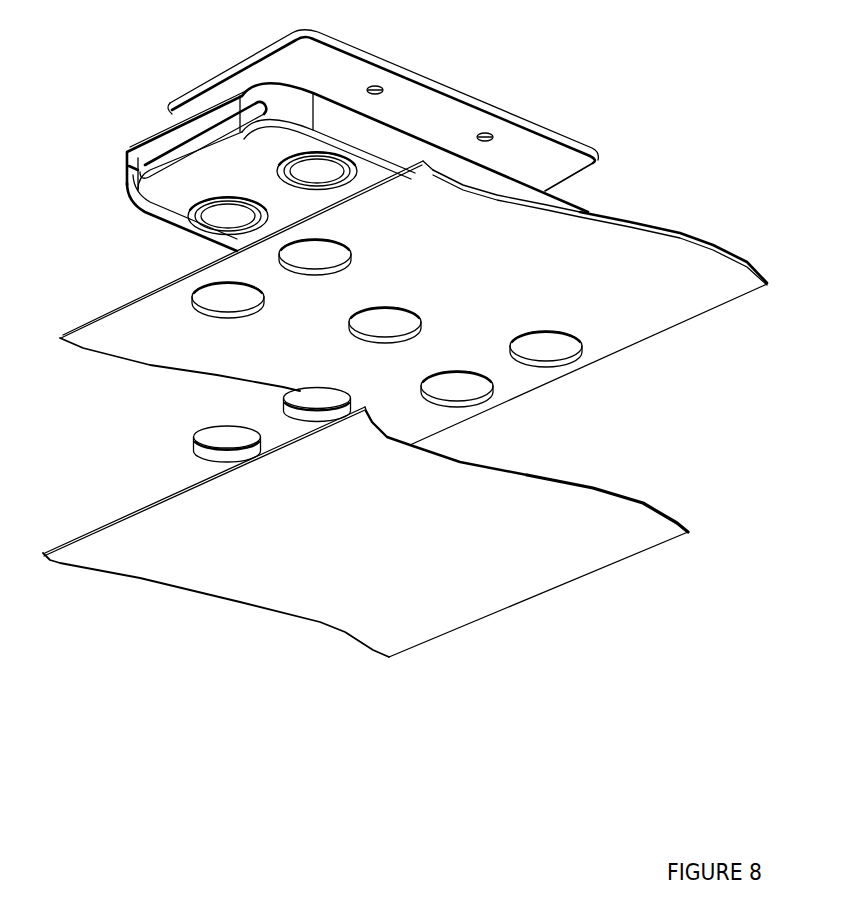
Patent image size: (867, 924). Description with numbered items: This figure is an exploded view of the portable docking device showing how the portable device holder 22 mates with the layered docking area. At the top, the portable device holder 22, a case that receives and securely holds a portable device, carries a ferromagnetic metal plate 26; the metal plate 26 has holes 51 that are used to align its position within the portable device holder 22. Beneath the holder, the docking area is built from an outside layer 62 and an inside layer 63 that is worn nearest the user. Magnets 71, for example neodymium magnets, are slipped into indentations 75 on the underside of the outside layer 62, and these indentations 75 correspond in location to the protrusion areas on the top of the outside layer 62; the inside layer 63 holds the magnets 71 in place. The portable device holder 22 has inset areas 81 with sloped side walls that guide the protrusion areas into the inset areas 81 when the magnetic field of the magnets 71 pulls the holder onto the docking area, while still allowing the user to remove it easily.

The portable device holder 22 is at (125, 180).
The metal plate 26 is at (298, 55).
The holes 51 is at (478, 136).
The outside layer 62 is at (630, 347).
The inside layer 63 is at (545, 592).
The magnets 71 is at (283, 407).
The indentations 75 is at (317, 272).
The inset areas 81 is at (313, 168).